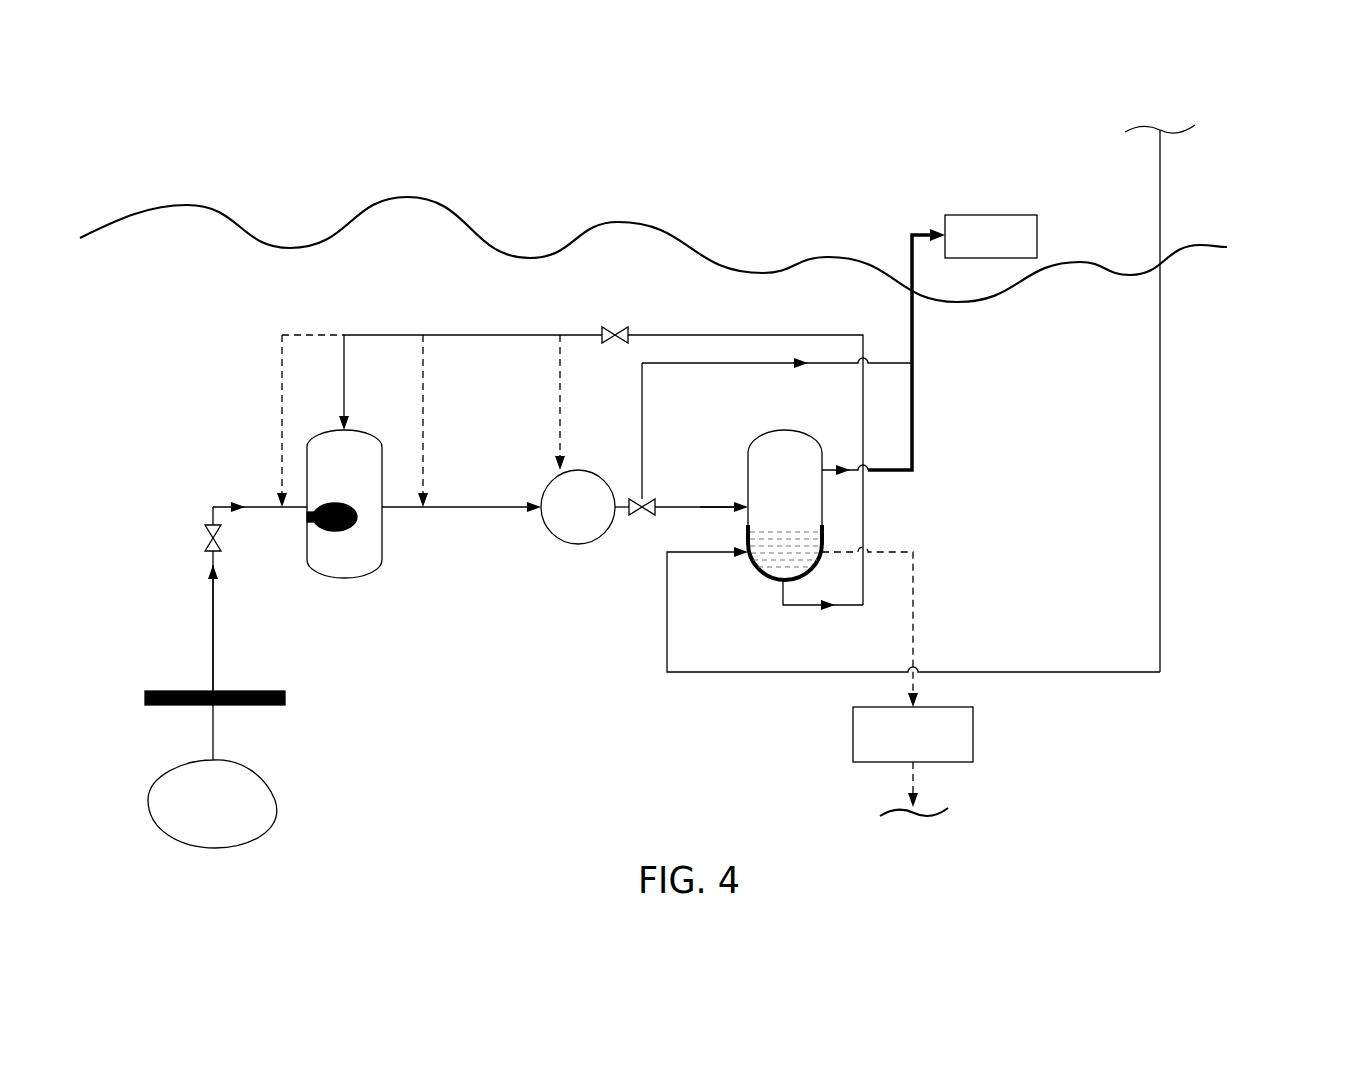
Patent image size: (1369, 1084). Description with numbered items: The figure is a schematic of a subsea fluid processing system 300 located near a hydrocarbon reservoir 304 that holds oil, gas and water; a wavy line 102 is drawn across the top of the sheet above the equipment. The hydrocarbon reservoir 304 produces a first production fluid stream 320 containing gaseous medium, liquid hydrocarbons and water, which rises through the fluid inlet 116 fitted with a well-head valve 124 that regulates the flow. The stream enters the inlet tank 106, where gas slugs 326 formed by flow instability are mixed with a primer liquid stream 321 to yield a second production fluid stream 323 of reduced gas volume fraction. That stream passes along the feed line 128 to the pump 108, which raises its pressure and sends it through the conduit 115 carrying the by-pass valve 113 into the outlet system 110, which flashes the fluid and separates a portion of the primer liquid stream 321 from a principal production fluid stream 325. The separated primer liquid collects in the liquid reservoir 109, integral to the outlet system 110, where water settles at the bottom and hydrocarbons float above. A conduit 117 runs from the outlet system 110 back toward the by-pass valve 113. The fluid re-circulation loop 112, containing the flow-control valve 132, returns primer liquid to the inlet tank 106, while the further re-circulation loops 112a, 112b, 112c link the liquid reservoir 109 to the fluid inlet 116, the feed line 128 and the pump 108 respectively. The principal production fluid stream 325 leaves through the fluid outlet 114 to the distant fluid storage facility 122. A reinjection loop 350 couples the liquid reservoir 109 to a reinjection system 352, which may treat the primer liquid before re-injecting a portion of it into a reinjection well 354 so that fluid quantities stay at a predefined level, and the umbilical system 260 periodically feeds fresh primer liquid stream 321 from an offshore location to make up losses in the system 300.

The water surface 102 is at (455, 210).
The inlet tank 106 is at (385, 540).
The pump 108 is at (585, 548).
The liquid reservoir 109 is at (746, 537).
The outlet system 110 is at (760, 418).
The fluid re-circulation loop 112 is at (347, 348).
The fluid re-circulation loop 112a is at (282, 348).
The fluid re-circulation loop 112b is at (423, 348).
The fluid re-circulation loop 112c is at (560, 348).
The by-pass valve 113 is at (627, 492).
The fluid outlet 114 is at (913, 403).
The conduit 115 is at (680, 500).
The fluid inlet 116 is at (210, 635).
The conduit 117 is at (640, 420).
The distant fluid storage facility 122 is at (1037, 235).
The well-head valve 124 is at (207, 530).
The feed line 128 is at (495, 500).
The flow-control valve 132 is at (617, 330).
The umbilical system 260 is at (1160, 515).
The subsea fluid processing system 300 is at (1245, 325).
The hydrocarbon reservoir 304 is at (150, 795).
The first production fluid stream 320 is at (237, 505).
The primer liquid stream 321 is at (338, 414).
The second production fluid stream 323 is at (533, 512).
The principal production fluid stream 325 is at (843, 465).
The gas slugs 326 is at (340, 503).
The reinjection loop 350 is at (914, 580).
The reinjection system 352 is at (973, 733).
The reinjection well 354 is at (932, 818).